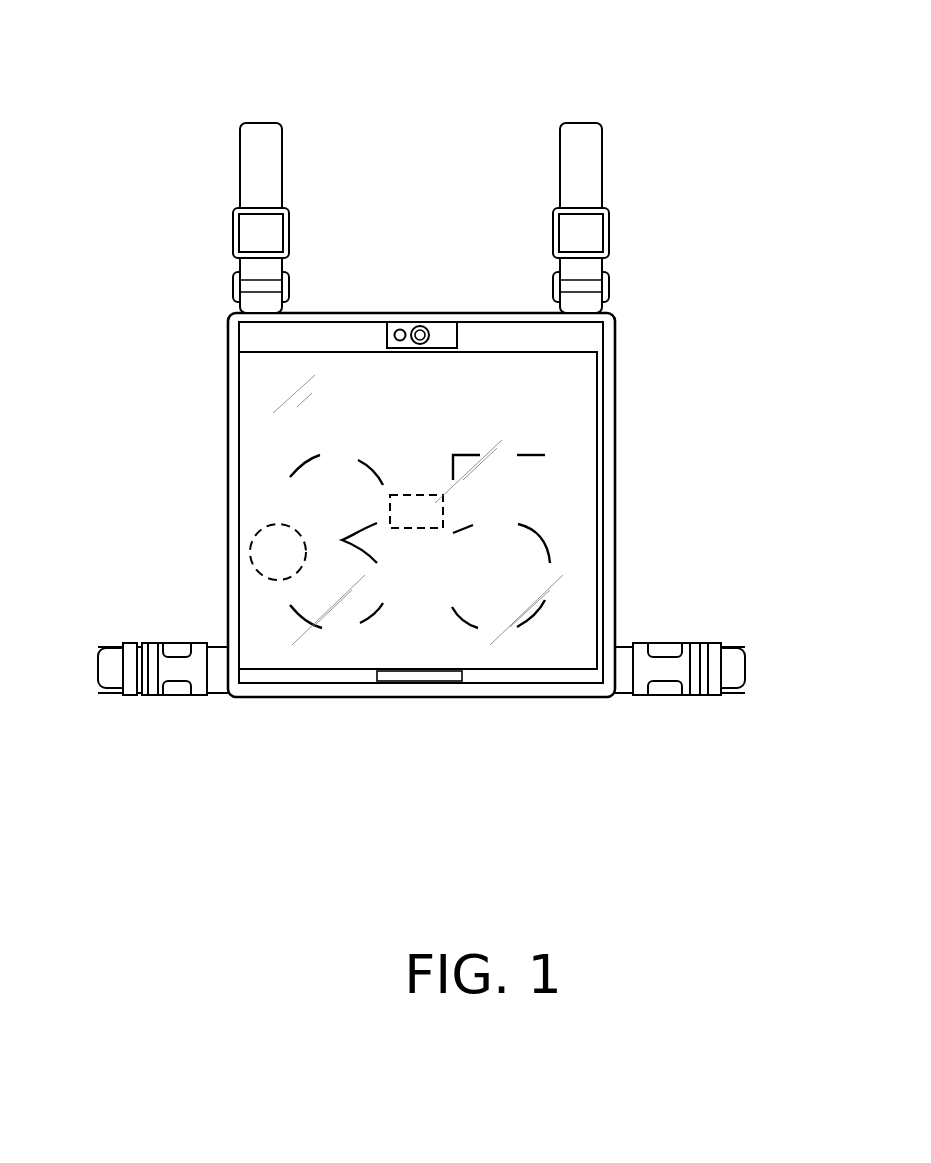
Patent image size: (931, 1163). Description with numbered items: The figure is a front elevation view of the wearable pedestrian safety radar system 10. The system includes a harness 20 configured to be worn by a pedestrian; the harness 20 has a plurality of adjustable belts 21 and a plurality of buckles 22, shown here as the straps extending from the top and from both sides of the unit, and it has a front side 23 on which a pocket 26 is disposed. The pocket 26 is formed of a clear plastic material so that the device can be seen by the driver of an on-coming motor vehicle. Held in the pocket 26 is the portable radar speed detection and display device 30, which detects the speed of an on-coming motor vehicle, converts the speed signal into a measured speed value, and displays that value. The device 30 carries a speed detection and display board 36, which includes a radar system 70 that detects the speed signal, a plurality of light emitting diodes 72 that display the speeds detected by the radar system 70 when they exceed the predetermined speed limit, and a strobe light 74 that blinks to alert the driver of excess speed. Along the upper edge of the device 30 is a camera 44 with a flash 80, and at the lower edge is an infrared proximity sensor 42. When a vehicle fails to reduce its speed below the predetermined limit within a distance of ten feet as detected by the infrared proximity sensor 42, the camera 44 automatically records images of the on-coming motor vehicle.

The wearable pedestrian safety radar system 10 is at (147, 86).
The harness 20 is at (593, 160).
The adjustable belts 21 is at (417, 403).
The buckles 22 is at (162, 678).
The front side 23 is at (588, 228).
The pocket 26 is at (613, 340).
The portable radar speed detection and display device 30 is at (598, 537).
The speed detection and display board 36 is at (250, 412).
The infrared proximity sensor 42 is at (413, 676).
The camera 44 is at (443, 328).
The radar system 70 is at (257, 545).
The light emitting diodes 72 is at (545, 535).
The strobe light 74 is at (403, 505).
The flash 80 is at (400, 327).